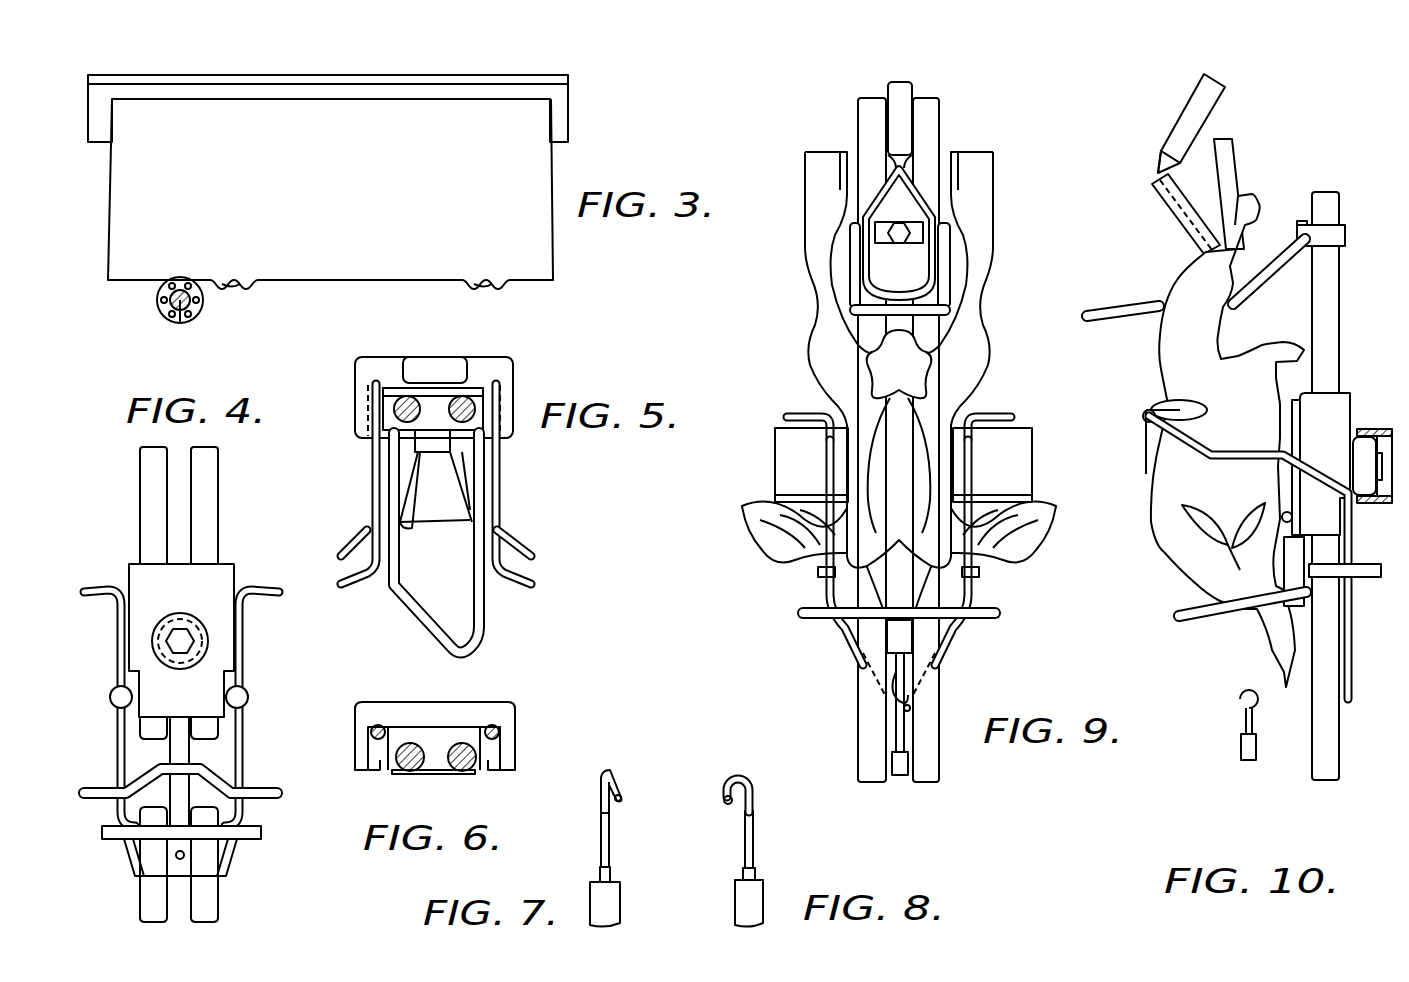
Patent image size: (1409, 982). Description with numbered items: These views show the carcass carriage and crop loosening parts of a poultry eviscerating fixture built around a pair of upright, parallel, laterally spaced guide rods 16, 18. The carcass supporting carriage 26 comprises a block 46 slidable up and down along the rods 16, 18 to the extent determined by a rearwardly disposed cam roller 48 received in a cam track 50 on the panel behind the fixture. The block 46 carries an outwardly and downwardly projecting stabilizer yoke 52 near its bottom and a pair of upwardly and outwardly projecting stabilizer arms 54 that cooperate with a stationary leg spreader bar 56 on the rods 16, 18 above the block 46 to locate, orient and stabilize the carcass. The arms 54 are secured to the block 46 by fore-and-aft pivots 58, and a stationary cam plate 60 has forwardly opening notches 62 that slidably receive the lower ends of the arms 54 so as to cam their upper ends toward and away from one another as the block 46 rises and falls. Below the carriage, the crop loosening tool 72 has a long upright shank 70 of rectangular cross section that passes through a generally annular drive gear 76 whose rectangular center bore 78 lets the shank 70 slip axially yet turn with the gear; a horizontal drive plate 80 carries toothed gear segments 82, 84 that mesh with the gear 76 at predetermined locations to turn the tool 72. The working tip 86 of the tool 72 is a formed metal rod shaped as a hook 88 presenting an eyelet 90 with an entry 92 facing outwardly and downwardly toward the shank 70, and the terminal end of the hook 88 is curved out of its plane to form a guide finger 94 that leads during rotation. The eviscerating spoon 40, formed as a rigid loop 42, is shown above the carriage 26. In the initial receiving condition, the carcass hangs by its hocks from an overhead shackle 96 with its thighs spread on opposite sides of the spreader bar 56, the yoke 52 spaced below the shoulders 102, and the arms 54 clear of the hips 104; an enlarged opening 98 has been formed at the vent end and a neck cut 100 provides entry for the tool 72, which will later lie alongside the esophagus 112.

In FIG. 4, the guide rod 16 is at (213, 485).
In FIG. 5, the guide rod 16 is at (400, 398).
In FIG. 6, the guide rod 16 is at (410, 768).
In FIG. 9, the guide rod 16 is at (868, 118).
In FIG. 4, the guide rod 18 is at (154, 487).
In FIG. 5, the guide rod 18 is at (466, 397).
In FIG. 6, the guide rod 18 is at (463, 768).
In FIG. 9, the guide rod 18 is at (932, 117).
In FIG. 10, the guide rod 18 is at (1328, 276).
In FIG. 4, the carcass supporting carriage 26 is at (240, 550).
In FIG. 9, the carcass supporting carriage 26 is at (972, 415).
In FIG. 10, the carcass supporting carriage 26 is at (1350, 378).
In FIG. 4, the eviscerating device or spoon 40 is at (179, 771).
In FIG. 9, the eviscerating device or spoon 40 is at (925, 142).
In FIG. 10, the eviscerating device or spoon 40 is at (1148, 190).
In FIG. 9, the rigid loop 42 is at (867, 257).
In FIG. 10, the rigid loop 42 is at (1190, 235).
In FIG. 4, the block 46 is at (141, 588).
In FIG. 5, the block 46 is at (360, 432).
In FIG. 10, the block 46 is at (1338, 405).
In FIG. 4, the cam roller 48 is at (196, 634).
In FIG. 5, the cam roller 48 is at (403, 388).
In FIG. 10, the cam roller 48 is at (1355, 476).
In FIG. 9, the cam track 50 is at (1020, 490).
In FIG. 10, the cam track 50 is at (1163, 442).
In FIG. 4, the stabilizer yoke 52 is at (93, 798).
In FIG. 5, the stabilizer yoke 52 is at (521, 549).
In FIG. 9, the stabilizer yoke 52 is at (983, 603).
In FIG. 10, the stabilizer yoke 52 is at (1205, 624).
In FIG. 4, the stabilizer arms 54 is at (117, 643).
In FIG. 5, the stabilizer arms 54 is at (372, 487).
In FIG. 6, the stabilizer arms 54 is at (370, 733).
In FIG. 9, the stabilizer arms 54 is at (823, 448).
In FIG. 10, the stabilizer arms 54 is at (1183, 452).
In FIG. 5, the leg spreader bar 56 is at (415, 620).
In FIG. 9, the leg spreader bar 56 is at (937, 337).
In FIG. 10, the leg spreader bar 56 is at (1091, 311).
In FIG. 4, the fore-and-aft pivots 58 is at (118, 700).
In FIG. 10, the fore-and-aft pivots 58 is at (1287, 517).
In FIG. 4, the cam plate 60 is at (252, 839).
In FIG. 5, the cam plate 60 is at (505, 371).
In FIG. 6, the cam plate 60 is at (423, 708).
In FIG. 9, the cam plate 60 is at (820, 570).
In FIG. 10, the cam plate 60 is at (1362, 571).
In FIG. 6, the notches 62 is at (380, 770).
In FIG. 3, the shank 70 is at (180, 323).
In FIG. 7, the shank 70 is at (615, 905).
In FIG. 8, the shank 70 is at (740, 898).
In FIG. 9, the shank 70 is at (898, 775).
In FIG. 10, the shank 70 is at (1249, 760).
In FIG. 7, the crop loosening tool 72 is at (586, 870).
In FIG. 8, the crop loosening tool 72 is at (770, 866).
In FIG. 9, the crop loosening tool 72 is at (920, 746).
In FIG. 10, the crop loosening tool 72 is at (1228, 731).
In FIG. 3, the drive gear 76 is at (157, 312).
In FIG. 3, the rectangular center bore 78 is at (180, 290).
In FIG. 3, the drive plate 80 is at (543, 238).
In FIG. 3, the toothed gear segment 82 is at (247, 287).
In FIG. 3, the toothed gear segment 84 is at (500, 286).
In FIG. 7, the tip 86 is at (596, 784).
In FIG. 8, the tip 86 is at (770, 766).
In FIG. 7, the hook 88 is at (607, 770).
In FIG. 8, the hook 88 is at (747, 773).
In FIG. 9, the hook 88 is at (897, 700).
In FIG. 10, the hook 88 is at (1249, 690).
In FIG. 8, the eyelet 90 is at (750, 797).
In FIG. 7, the entry 92 is at (615, 813).
In FIG. 8, the entry 92 is at (738, 812).
In FIG. 7, the curved guide finger 94 is at (625, 793).
In FIG. 8, the curved guide finger 94 is at (724, 797).
In FIG. 9, the curved guide finger 94 is at (910, 707).
In FIG. 9, the overhead shackle 96 is at (812, 183).
In FIG. 10, the overhead shackle 96 is at (1226, 160).
In FIG. 9, the enlarged opening 98 is at (900, 397).
In FIG. 9, the neck cut 100 is at (858, 648).
In FIG. 9, the shoulders 102 is at (899, 548).
In FIG. 10, the shoulders 102 is at (1216, 597).
In FIG. 9, the hips 104 is at (817, 405).
In FIG. 10, the hips 104 is at (1152, 404).
In FIG. 9, the esophagus 112 is at (900, 670).